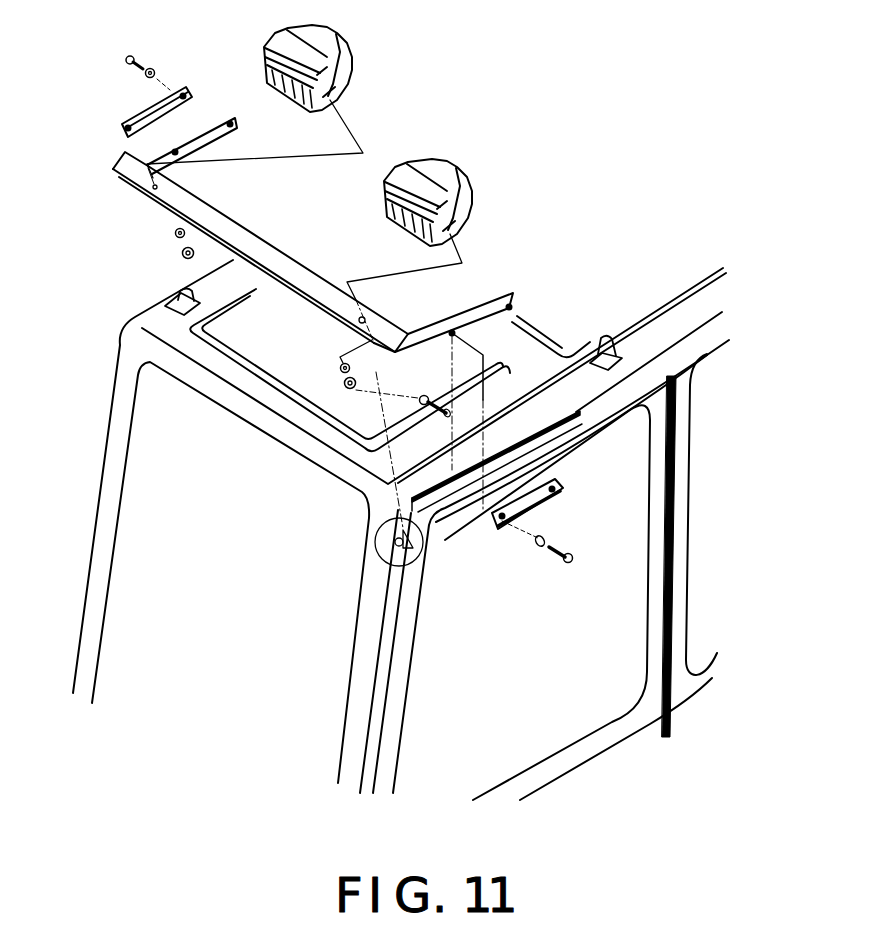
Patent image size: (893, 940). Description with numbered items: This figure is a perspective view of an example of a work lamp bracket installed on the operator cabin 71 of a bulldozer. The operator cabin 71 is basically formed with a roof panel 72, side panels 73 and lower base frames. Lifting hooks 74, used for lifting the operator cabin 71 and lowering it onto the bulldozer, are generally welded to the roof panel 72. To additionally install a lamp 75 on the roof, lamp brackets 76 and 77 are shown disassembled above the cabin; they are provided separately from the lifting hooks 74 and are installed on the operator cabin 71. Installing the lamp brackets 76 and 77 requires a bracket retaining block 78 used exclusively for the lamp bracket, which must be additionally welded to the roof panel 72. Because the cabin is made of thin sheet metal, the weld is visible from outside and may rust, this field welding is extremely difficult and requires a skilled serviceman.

The operator cabin 71 is at (737, 387).
The roof panel 72 is at (540, 362).
The side panel 73 is at (685, 535).
The lifting hook 74 is at (178, 297).
The lamp 75 is at (333, 39).
The lamp bracket 76 is at (124, 176).
The lamp bracket 77 is at (140, 118).
The bracket retaining block 78 is at (462, 497).